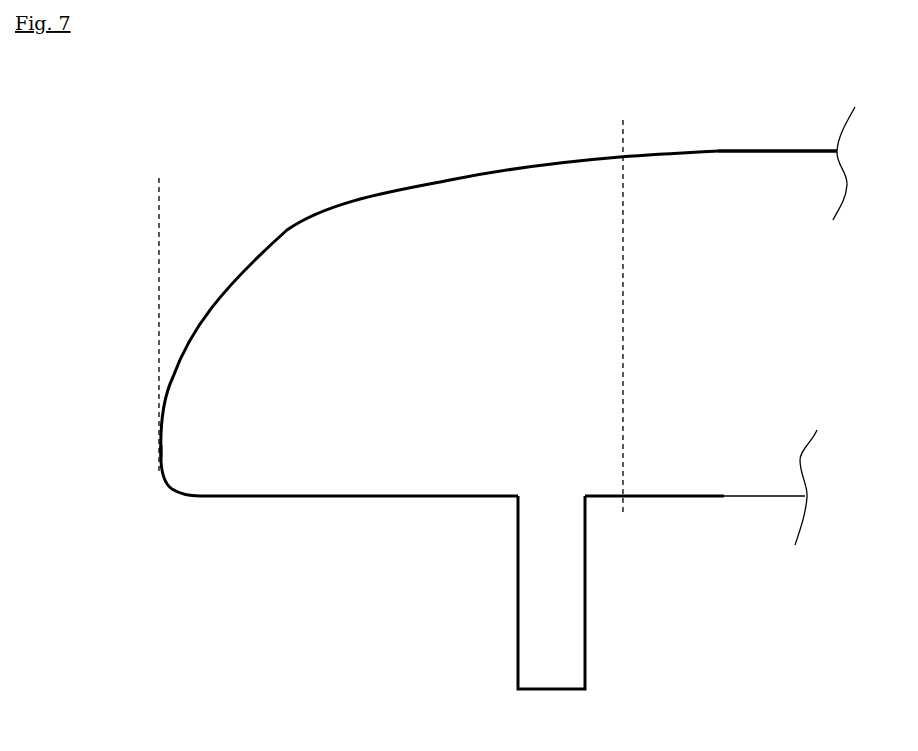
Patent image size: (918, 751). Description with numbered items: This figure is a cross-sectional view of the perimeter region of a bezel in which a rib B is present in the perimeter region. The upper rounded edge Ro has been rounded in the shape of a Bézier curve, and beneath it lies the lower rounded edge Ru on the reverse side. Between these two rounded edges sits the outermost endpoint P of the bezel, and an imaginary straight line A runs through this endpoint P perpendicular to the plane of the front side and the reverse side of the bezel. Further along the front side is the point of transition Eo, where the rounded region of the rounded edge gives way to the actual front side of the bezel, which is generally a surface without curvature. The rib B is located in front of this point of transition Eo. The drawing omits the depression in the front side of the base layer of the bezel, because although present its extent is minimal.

The straight line A is at (148, 311).
The upper rounded edge Ro is at (301, 208).
The point of transition Eo is at (714, 134).
The outermost endpoint of the bezel P is at (148, 465).
The lower rounded edge Ru is at (165, 493).
The rib B is at (534, 590).